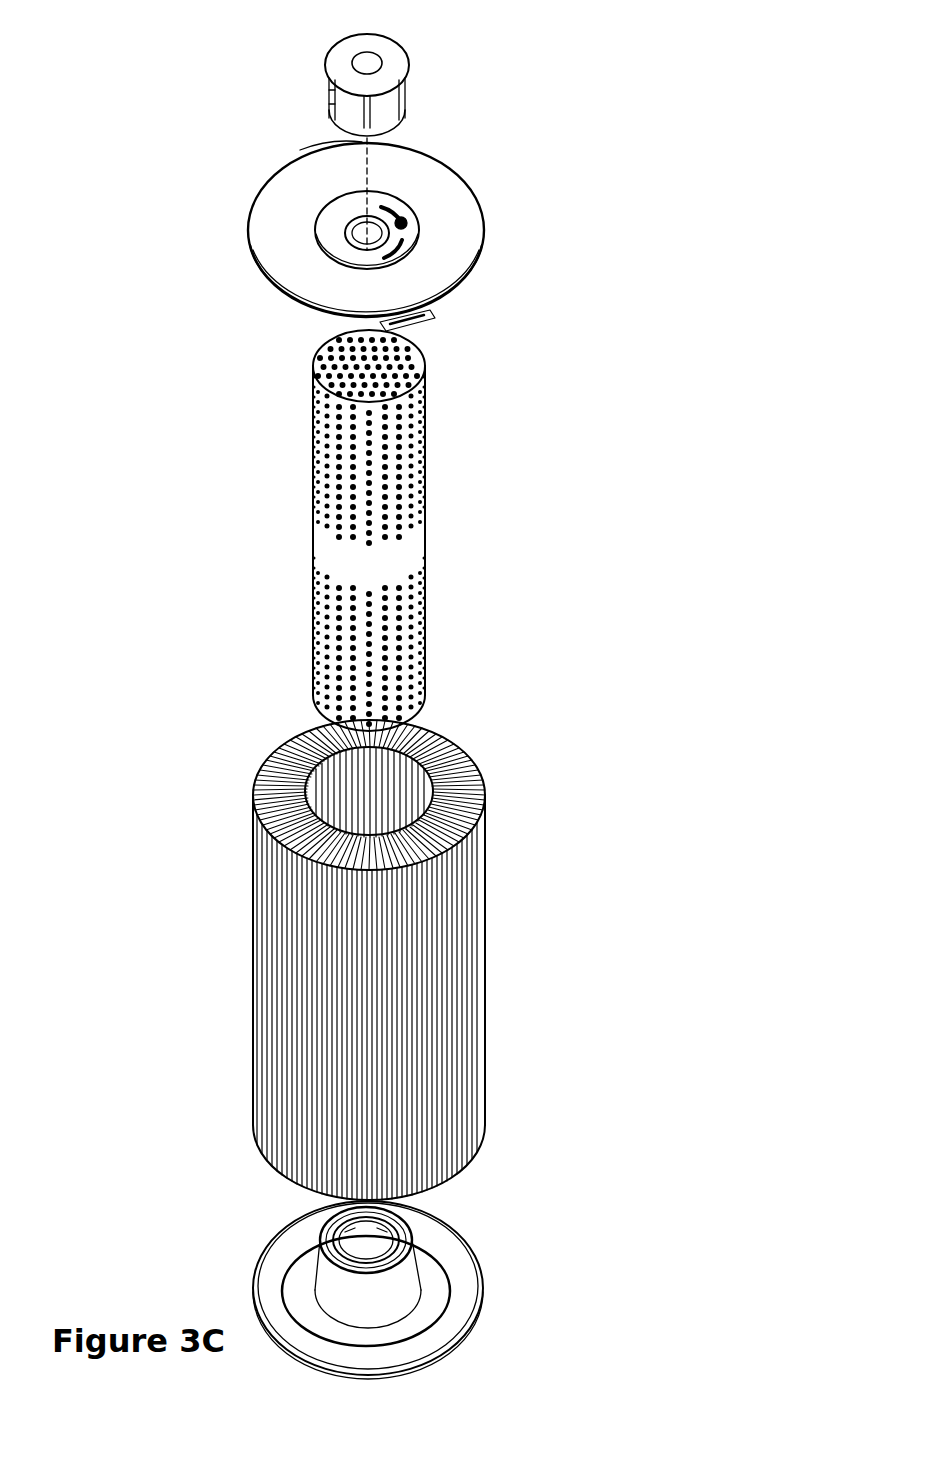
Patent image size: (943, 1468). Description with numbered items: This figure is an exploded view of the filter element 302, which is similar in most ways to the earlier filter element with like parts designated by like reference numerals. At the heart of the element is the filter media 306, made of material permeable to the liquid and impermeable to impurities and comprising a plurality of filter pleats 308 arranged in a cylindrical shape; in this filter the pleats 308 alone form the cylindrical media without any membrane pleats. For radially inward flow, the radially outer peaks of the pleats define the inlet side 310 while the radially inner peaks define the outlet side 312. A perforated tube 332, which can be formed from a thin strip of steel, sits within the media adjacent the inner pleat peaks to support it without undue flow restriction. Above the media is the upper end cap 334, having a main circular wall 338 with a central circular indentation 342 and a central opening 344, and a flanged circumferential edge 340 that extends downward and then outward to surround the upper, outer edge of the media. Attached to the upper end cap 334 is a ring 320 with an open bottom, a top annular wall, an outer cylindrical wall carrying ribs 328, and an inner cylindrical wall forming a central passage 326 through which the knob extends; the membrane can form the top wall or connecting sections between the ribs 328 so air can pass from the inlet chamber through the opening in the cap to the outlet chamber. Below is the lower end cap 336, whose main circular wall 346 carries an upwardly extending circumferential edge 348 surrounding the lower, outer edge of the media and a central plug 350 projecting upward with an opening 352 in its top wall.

The filter element 302 is at (543, 592).
The filter media 306 is at (485, 772).
The filter pleats 308 is at (300, 890).
The inlet side 310 is at (477, 818).
The outlet side 312 is at (327, 771).
The ring 320 is at (410, 90).
The central passage 326 is at (360, 62).
The ribs 328 is at (335, 103).
The perforated tube 332 is at (413, 540).
The upper end cap 334 is at (455, 235).
The main circular wall 338 is at (438, 268).
The flanged circumferential edge 340 is at (440, 300).
The central circular indentation 342 is at (330, 240).
The opening 344 is at (352, 224).
The lower end cap 336 is at (487, 1280).
The main circular wall 346 is at (440, 1333).
The circumferential edge 348 is at (415, 1362).
The central plug 350 is at (408, 1268).
The opening 352 is at (350, 1243).